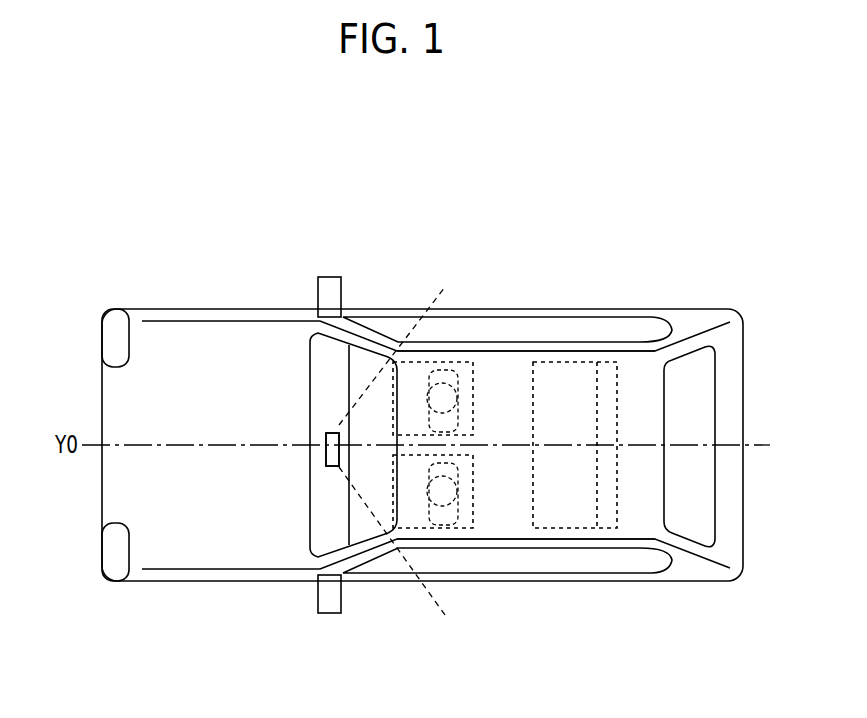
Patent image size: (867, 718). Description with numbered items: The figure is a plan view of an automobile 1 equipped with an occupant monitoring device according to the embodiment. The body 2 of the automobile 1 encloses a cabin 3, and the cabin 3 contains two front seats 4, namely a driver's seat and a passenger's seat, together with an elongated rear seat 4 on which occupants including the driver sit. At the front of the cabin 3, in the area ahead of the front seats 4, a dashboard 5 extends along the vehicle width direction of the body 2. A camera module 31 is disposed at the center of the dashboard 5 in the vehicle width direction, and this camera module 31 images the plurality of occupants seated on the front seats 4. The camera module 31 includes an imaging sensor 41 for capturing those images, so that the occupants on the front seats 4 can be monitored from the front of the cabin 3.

The automobile 1 is at (155, 252).
The body 2 is at (233, 309).
The cabin 3 is at (510, 502).
The seat 4 is at (472, 368).
The dashboard 5 is at (333, 523).
The imaging sensor 41 is at (325, 460).
The camera module 31 is at (325, 460).